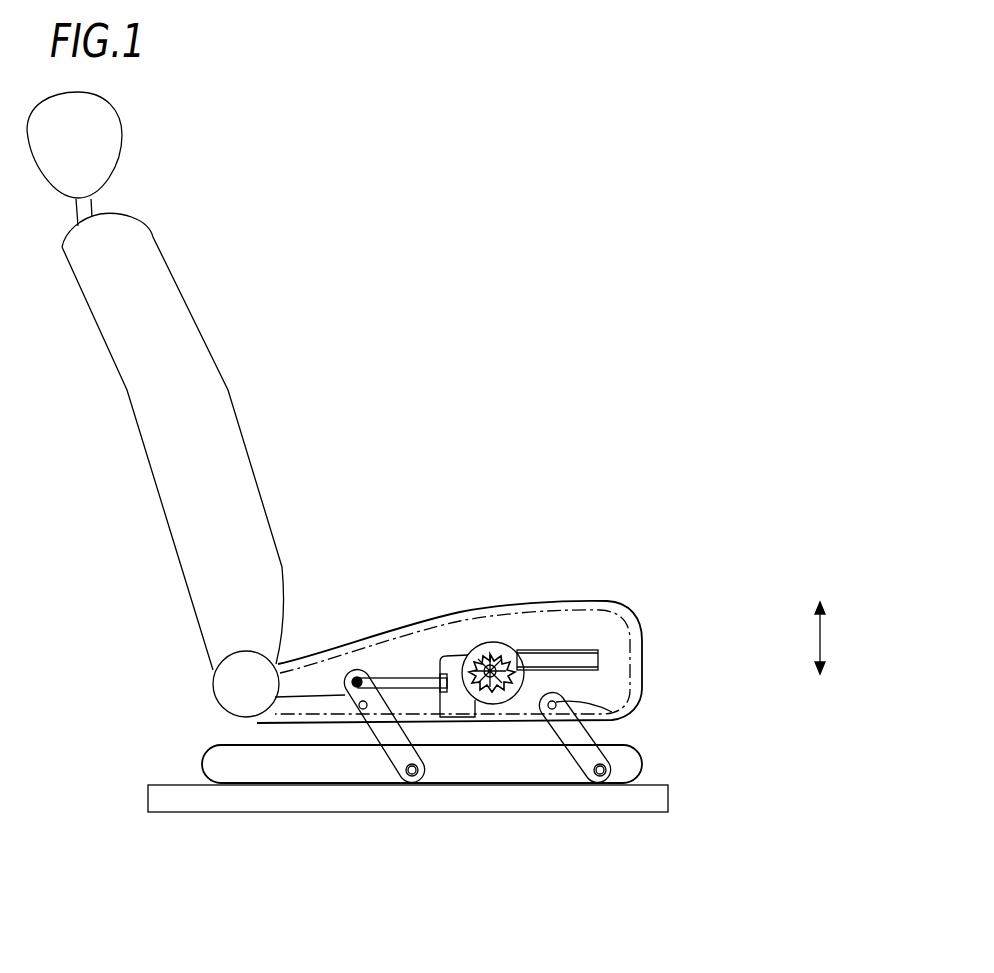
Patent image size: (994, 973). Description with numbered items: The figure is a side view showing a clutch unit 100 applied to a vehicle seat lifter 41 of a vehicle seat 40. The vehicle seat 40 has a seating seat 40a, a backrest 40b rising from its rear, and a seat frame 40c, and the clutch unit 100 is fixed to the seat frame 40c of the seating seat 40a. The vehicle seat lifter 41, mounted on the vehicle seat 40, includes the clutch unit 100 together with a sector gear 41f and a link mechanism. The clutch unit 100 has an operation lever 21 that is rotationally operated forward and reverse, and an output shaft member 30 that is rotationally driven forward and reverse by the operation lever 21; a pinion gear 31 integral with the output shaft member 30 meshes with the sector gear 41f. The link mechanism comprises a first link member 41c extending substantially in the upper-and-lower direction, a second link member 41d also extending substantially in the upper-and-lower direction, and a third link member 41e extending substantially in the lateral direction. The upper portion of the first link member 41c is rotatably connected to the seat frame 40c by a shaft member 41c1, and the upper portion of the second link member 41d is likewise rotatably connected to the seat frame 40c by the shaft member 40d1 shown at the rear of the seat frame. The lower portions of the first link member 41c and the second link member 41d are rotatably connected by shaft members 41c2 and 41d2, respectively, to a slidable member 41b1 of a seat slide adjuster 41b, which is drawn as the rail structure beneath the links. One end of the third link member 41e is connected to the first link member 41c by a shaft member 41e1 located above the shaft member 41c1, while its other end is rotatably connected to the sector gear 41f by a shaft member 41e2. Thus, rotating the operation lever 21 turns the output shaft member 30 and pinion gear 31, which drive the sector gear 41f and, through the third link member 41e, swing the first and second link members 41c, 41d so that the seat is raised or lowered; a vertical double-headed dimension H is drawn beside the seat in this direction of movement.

The vehicle seat 40 is at (163, 580).
The seating seat 40a is at (617, 607).
The backrest 40b is at (192, 347).
The seat frame 40c is at (627, 693).
The rear bracket of seat cushion frame 40d1 is at (557, 706).
The vehicle seat lifter 41 is at (623, 494).
The seat slide adjuster 41b is at (218, 827).
The slidable member 41b1 is at (308, 770).
The first link member 41c is at (378, 748).
The shaft member 41c1 is at (275, 697).
The shaft member 41c2 is at (423, 773).
The second link member 41d is at (562, 745).
The shaft member 41d2 is at (612, 766).
The third link member 41e is at (402, 679).
The shaft member 41e1 is at (355, 678).
The shaft member 41e2 is at (440, 713).
The sector gear 41f is at (447, 657).
The clutch unit 100 is at (520, 643).
The pinion gear 31 is at (493, 665).
The output shaft member 30 is at (492, 672).
The operation lever 21 is at (600, 655).
The seat height adjustment range H is at (836, 638).